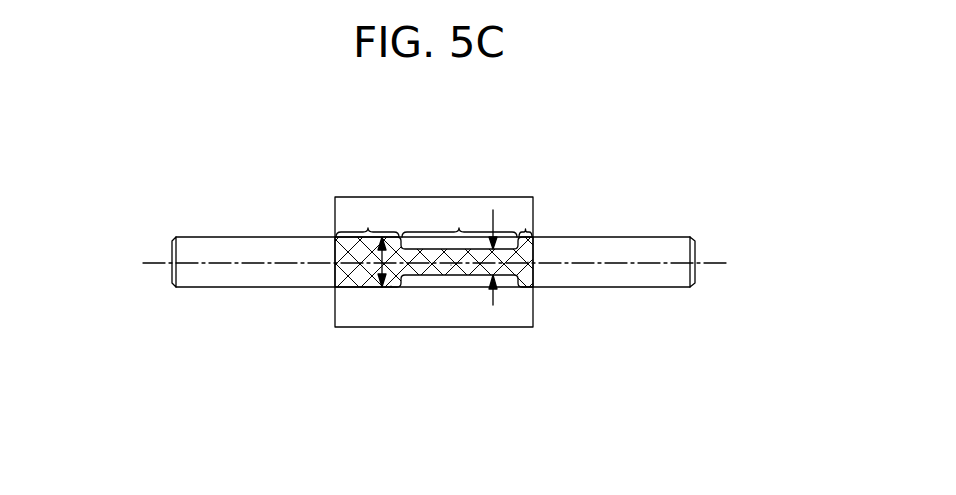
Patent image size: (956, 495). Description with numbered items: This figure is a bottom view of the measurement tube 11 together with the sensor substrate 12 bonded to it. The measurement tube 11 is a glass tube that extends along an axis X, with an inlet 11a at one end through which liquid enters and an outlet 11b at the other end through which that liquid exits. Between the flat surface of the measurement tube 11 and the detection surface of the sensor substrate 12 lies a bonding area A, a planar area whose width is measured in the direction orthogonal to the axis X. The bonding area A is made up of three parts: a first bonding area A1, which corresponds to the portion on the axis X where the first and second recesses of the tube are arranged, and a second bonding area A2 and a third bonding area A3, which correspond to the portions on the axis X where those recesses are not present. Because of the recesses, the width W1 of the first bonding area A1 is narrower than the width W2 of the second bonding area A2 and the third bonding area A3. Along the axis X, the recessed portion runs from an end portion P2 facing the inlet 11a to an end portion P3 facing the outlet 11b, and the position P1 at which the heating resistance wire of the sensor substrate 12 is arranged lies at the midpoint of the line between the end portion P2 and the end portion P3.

The measurement tube 11 is at (660, 237).
The inlet 11a is at (160, 237).
The outlet 11b is at (713, 247).
The sensor substrate 12 is at (413, 197).
The bonding area A is at (467, 290).
The first bonding area A1 is at (459, 218).
The second bonding area A2 is at (367, 218).
The third bonding area A3 is at (518, 218).
The position where the heating resistance wire is arranged P1 is at (451, 266).
The end portion facing the inlet P2 is at (391, 287).
The end portion facing the outlet P3 is at (528, 262).
The width of the first bonding area W1 is at (512, 265).
The width of the second bonding area and the third bonding area W2 is at (364, 262).
The axis X is at (712, 265).